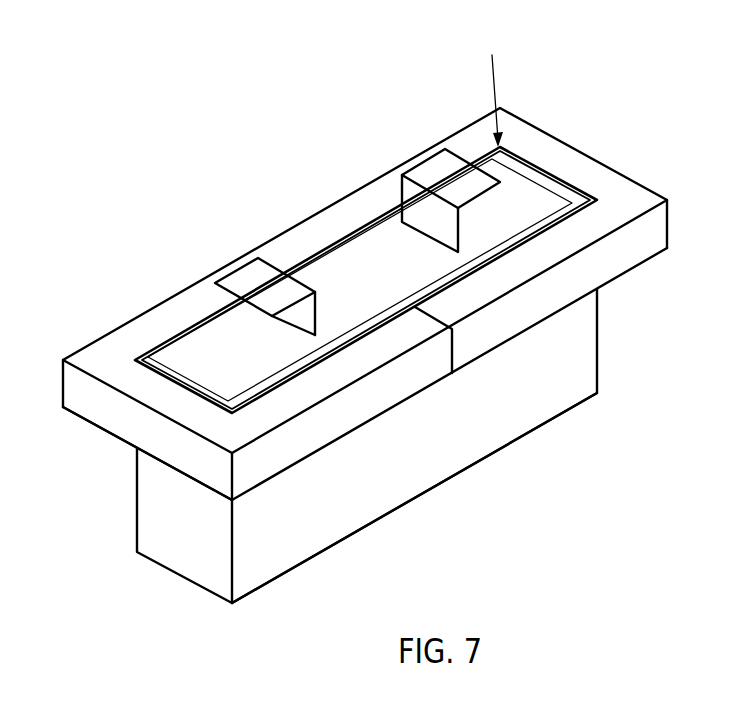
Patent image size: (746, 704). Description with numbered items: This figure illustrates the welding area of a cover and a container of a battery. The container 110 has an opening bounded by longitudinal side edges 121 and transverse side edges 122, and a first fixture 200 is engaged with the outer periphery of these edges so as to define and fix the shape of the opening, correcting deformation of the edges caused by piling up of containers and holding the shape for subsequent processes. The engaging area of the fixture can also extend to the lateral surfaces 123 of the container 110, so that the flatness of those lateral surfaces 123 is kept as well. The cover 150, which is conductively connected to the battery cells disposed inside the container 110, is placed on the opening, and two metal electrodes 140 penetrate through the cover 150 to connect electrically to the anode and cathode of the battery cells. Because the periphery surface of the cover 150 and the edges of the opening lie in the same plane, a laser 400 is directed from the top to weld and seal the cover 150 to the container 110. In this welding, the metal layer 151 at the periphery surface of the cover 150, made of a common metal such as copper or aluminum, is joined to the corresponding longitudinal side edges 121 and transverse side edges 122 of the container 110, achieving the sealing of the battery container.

The container 110 is at (186, 540).
The longitudinal side edges 121 is at (370, 222).
The transverse side edges 122 is at (167, 387).
The lateral surfaces 123 is at (435, 463).
The electrodes 140 is at (253, 272).
The cover 150 is at (203, 356).
The metal layer 151 is at (578, 198).
The first fixture 200 is at (382, 395).
The laser 400 is at (495, 80).